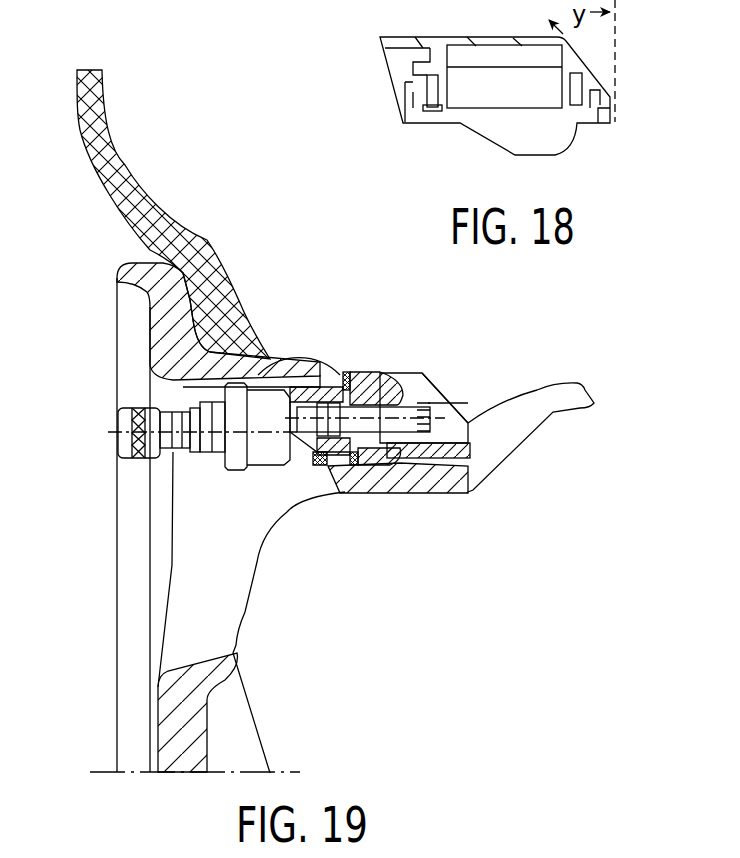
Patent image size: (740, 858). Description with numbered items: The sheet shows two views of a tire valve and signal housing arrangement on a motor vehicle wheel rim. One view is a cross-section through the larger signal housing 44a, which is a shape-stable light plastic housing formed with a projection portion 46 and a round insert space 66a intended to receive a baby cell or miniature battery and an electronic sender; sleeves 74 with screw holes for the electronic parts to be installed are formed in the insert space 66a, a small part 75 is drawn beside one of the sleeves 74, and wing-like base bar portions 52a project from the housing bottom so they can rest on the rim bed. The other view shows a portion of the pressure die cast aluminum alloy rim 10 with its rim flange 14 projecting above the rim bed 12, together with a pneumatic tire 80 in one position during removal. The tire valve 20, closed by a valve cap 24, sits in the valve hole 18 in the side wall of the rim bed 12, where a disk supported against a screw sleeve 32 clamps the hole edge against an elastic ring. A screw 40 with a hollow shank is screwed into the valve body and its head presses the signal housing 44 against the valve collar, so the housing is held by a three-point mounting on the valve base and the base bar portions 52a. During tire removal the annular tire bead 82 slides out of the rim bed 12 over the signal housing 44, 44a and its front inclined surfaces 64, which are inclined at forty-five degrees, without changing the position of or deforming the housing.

In FIG. 19, the rim 10 is at (268, 568).
In FIG. 19, the rim bed 12 is at (465, 470).
In FIG. 19, the rim flange 14 is at (148, 299).
In FIG. 19, the valve hole 18 is at (300, 360).
In FIG. 19, the tire valve 20 is at (187, 478).
In FIG. 19, the valve cap 24 is at (158, 462).
In FIG. 19, the screw sleeve 32 is at (283, 453).
In FIG. 19, the screw 40 is at (426, 385).
In FIG. 19, the signal housing 44 is at (575, 419).
In FIG. 19, the signal housing 44a is at (468, 421).
In FIG. 19, the projection portion 46 is at (384, 373).
In FIG. 18, the base bar portions 52a is at (555, 143).
In FIG. 19, the inclined surfaces 64 is at (475, 418).
In FIG. 18, the insert space 66a is at (467, 60).
In FIG. 18, the sleeves 74 is at (426, 83).
In FIG. 18, the retainer 75 is at (434, 112).
In FIG. 19, the pneumatic tire 80 is at (162, 203).
In FIG. 19, the tire bead 82 is at (258, 340).